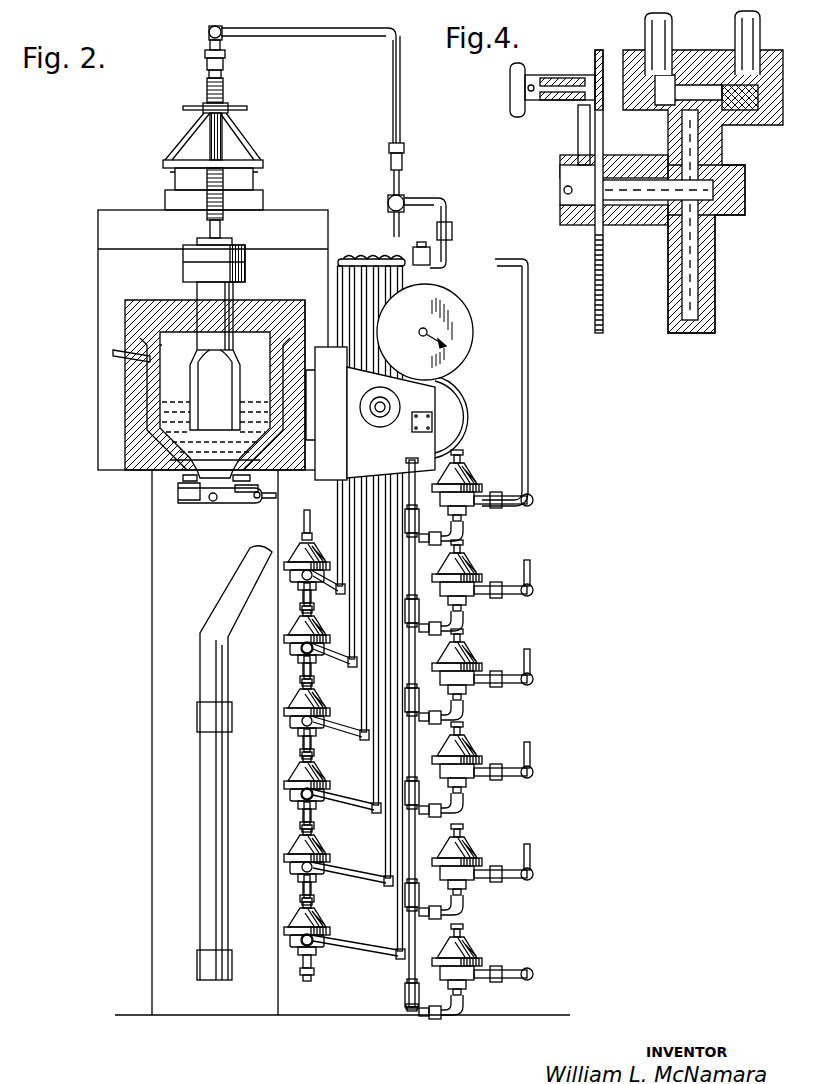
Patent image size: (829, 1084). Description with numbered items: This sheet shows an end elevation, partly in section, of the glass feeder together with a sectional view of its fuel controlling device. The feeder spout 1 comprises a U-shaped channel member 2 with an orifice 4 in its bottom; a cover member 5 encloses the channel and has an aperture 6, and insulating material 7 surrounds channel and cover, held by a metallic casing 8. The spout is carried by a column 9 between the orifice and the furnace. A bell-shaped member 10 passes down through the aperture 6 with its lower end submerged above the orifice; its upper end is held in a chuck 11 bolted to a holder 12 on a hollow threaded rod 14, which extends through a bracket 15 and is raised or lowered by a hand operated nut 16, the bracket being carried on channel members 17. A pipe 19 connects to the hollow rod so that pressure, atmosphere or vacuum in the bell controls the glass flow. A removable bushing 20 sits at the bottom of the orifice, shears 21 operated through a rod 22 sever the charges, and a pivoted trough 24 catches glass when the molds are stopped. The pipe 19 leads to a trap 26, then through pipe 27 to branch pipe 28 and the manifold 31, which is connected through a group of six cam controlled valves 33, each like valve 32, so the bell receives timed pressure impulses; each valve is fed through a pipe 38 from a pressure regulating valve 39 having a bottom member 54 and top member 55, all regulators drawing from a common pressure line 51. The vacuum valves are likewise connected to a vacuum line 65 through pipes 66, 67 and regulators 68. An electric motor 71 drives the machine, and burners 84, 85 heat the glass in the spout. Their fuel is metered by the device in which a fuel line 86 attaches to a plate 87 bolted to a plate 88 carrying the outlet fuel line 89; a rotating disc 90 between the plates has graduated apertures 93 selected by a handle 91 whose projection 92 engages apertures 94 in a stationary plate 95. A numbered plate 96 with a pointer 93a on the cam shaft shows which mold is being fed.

In FIG. 2, the feeder spout 1 is at (112, 292).
In FIG. 2, the U-shaped channel member 2 is at (150, 438).
In FIG. 2, the orifice 4 is at (195, 478).
In FIG. 2, the cover member 5 is at (286, 310).
In FIG. 2, the aperture 6 is at (233, 300).
In FIG. 2, the insulating material 7 is at (305, 305).
In FIG. 2, the metallic casing 8 is at (125, 334).
In FIG. 2, the column 9 is at (152, 920).
In FIG. 2, the bell-shaped member 10 is at (240, 392).
In FIG. 2, the chuck 11 is at (245, 270).
In FIG. 2, the holder 12 is at (232, 248).
In FIG. 2, the threaded rod 14 is at (207, 210).
In FIG. 2, the bracket 15 is at (222, 136).
In FIG. 2, the hand operated nut 16 is at (224, 108).
In FIG. 2, the channel members 17 is at (175, 180).
In FIG. 2, the pipe 19 is at (210, 36).
In FIG. 2, the removable bushing 20 is at (185, 503).
In FIG. 2, the shears 21 is at (214, 501).
In FIG. 2, the rod 22 is at (276, 496).
In FIG. 2, the trough 24 is at (236, 596).
In FIG. 2, the trap 26 is at (404, 149).
In FIG. 2, the pipe 27 is at (400, 181).
In FIG. 2, the branch pipe 28 is at (447, 215).
In FIG. 2, the manifold 31 is at (448, 262).
In FIG. 2, the valve 32 is at (404, 252).
In FIG. 2, the group of pressure valves 33 is at (421, 243).
In FIG. 2, the pipe 38 is at (350, 519).
In FIG. 2, the pressure regulating valve 39 is at (300, 624).
In FIG. 2, the pressure line 51 is at (304, 520).
In FIG. 2, the bottom member 54 is at (302, 650).
In FIG. 2, the top member 55 is at (300, 693).
In FIG. 2, the vacuum line 65 is at (415, 566).
In FIG. 2, the pipe 66 is at (531, 578).
In FIG. 2, the pipe 67 is at (526, 680).
In FIG. 2, the regulator 68 is at (468, 568).
In FIG. 2, the electric motor 71 is at (466, 418).
In FIG. 2, the burner 84 is at (118, 360).
In FIG. 2, the burner 85 is at (326, 413).
In FIG. 4, the fuel line 86 is at (672, 26).
In FIG. 4, the plate 87 is at (648, 60).
In FIG. 4, the plate 88 is at (715, 142).
In FIG. 4, the outlet fuel line 89 is at (760, 38).
In FIG. 4, the rotating disc 90 is at (716, 236).
In FIG. 4, the handle 91 is at (532, 100).
In FIG. 4, the projection 92 is at (598, 58).
In FIG. 4, the graduated apertures 93 is at (694, 72).
In FIG. 2, the pointer 93a is at (448, 345).
In FIG. 4, the apertures 94 is at (610, 100).
In FIG. 4, the stationary plate 95 is at (604, 283).
In FIG. 2, the plate 96 is at (448, 300).